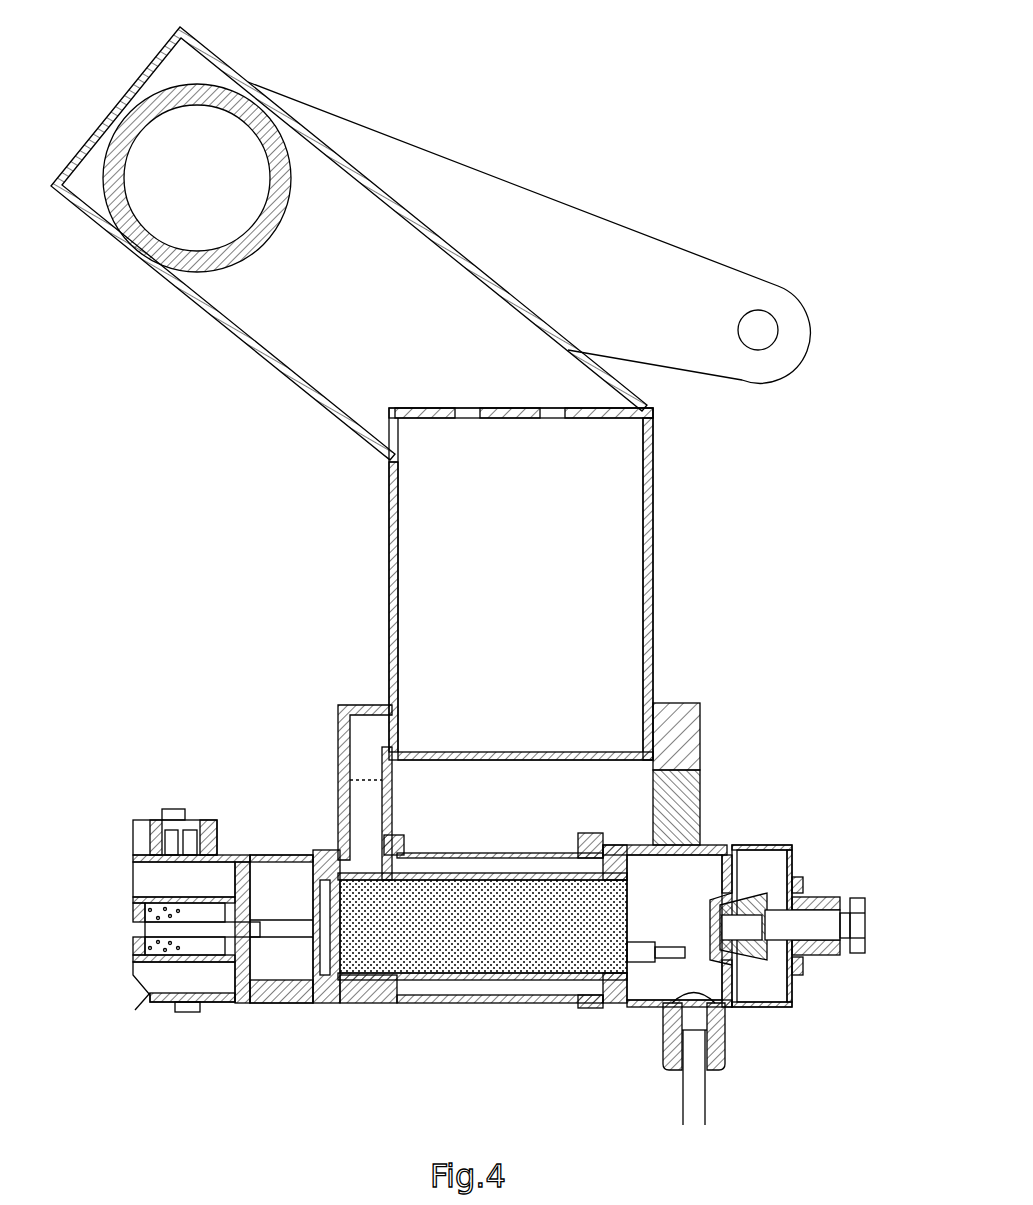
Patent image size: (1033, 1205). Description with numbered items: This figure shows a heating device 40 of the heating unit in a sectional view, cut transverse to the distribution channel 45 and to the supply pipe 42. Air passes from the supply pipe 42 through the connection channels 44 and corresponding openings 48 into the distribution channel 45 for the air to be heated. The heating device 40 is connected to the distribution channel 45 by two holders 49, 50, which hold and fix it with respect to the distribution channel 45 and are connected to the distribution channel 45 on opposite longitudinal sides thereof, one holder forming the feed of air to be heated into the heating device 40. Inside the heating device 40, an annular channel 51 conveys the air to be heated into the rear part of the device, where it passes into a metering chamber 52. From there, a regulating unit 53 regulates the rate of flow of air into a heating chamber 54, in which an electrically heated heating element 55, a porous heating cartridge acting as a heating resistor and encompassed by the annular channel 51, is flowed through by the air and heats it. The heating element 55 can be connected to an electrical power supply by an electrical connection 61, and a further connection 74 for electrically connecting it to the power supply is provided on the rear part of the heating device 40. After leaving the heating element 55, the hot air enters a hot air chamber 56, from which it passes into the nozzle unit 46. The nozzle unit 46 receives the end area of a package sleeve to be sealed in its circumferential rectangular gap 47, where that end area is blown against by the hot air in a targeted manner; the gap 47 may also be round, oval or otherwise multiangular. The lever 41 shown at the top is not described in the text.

The heating device 40 is at (270, 1083).
The lever 41 is at (533, 118).
The supply pipe 42 is at (135, 263).
The connection channels 44 is at (236, 347).
The distribution channel 45 is at (657, 571).
The nozzle unit 46 is at (110, 944).
The circumferential rectangular gap 47 is at (165, 880).
The openings 48 is at (521, 443).
The holder 49 is at (338, 735).
The holder 50 is at (703, 735).
The annular channel 51 is at (497, 868).
The metering chamber 52 is at (765, 865).
The regulating unit 53 is at (830, 870).
The heating chamber 54 is at (700, 880).
The heating element 55 is at (476, 940).
The hot air chamber 56 is at (283, 888).
The electrical connection 61 is at (643, 962).
The connection 74 is at (716, 1052).